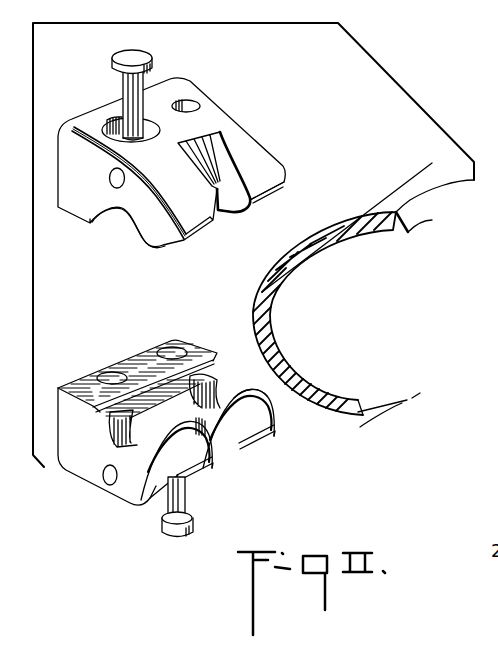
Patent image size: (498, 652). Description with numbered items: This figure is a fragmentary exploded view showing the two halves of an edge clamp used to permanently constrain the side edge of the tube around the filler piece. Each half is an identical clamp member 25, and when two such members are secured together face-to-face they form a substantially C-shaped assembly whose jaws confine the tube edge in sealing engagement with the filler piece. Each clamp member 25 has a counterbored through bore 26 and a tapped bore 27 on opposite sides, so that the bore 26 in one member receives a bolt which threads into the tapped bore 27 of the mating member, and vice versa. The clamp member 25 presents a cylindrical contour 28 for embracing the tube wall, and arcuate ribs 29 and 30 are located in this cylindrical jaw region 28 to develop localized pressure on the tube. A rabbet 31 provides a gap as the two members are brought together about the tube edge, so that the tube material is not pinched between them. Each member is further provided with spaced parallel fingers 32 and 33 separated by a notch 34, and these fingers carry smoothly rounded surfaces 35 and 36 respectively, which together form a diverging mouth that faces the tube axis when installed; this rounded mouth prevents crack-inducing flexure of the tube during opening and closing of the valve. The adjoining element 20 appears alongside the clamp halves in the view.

The rail 20 is at (400, 193).
The clamp member 25 is at (72, 115).
The counterbored through bore 26 is at (115, 128).
The tapped bore 27 is at (185, 101).
The cylindrical contour 28 is at (175, 393).
The arcuate rib 29 is at (155, 400).
The arcuate rib 30 is at (215, 382).
The rabbet 31 is at (148, 385).
The finger 32 is at (195, 238).
The finger 33 is at (272, 170).
The notch 34 is at (205, 134).
The rounded diverging surface 35 is at (159, 249).
The rounded diverging surface 36 is at (239, 211).